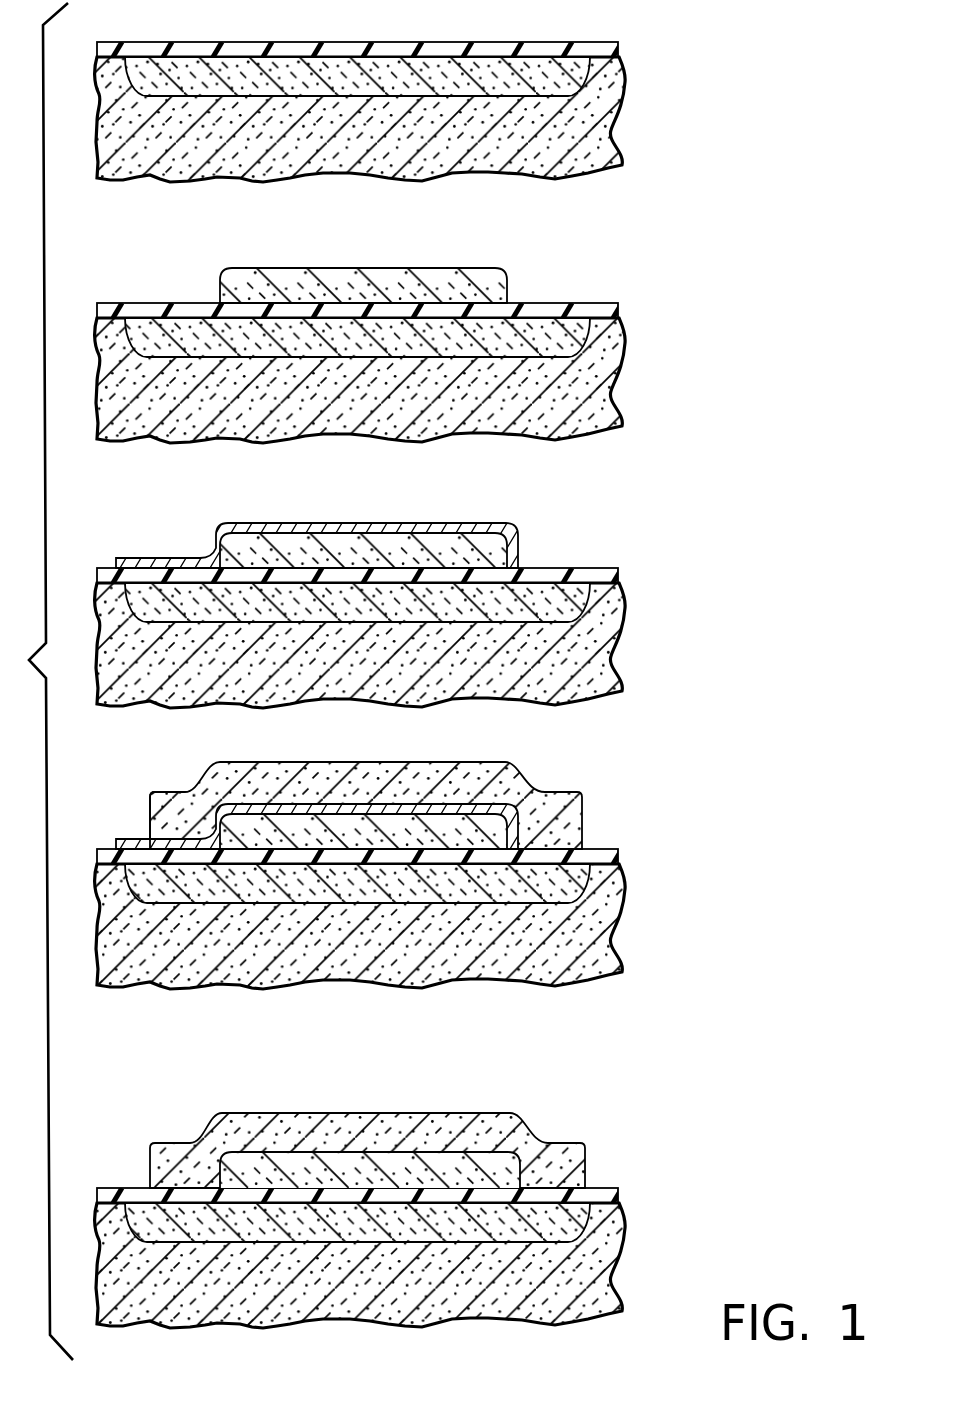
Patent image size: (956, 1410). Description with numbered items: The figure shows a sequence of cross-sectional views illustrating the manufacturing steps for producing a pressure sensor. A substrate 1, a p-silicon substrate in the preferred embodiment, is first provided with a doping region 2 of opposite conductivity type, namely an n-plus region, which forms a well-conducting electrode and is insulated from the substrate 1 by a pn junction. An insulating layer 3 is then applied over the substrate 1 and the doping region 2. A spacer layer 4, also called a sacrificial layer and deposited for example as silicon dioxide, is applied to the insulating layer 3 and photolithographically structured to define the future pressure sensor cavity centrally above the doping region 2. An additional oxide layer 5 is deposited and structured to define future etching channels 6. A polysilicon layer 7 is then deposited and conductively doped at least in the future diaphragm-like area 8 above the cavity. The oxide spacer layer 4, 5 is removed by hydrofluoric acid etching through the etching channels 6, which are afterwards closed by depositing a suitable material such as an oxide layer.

The substrate 1 is at (148, 178).
The doping region 2 is at (438, 77).
The insulating layer 3 is at (585, 44).
The spacer layer 4 is at (435, 280).
The additional oxide layer 5 is at (485, 523).
The etching channels 6 is at (162, 820).
The polysilicon layer 7 is at (573, 812).
The diaphragm-like area 8 is at (328, 1125).